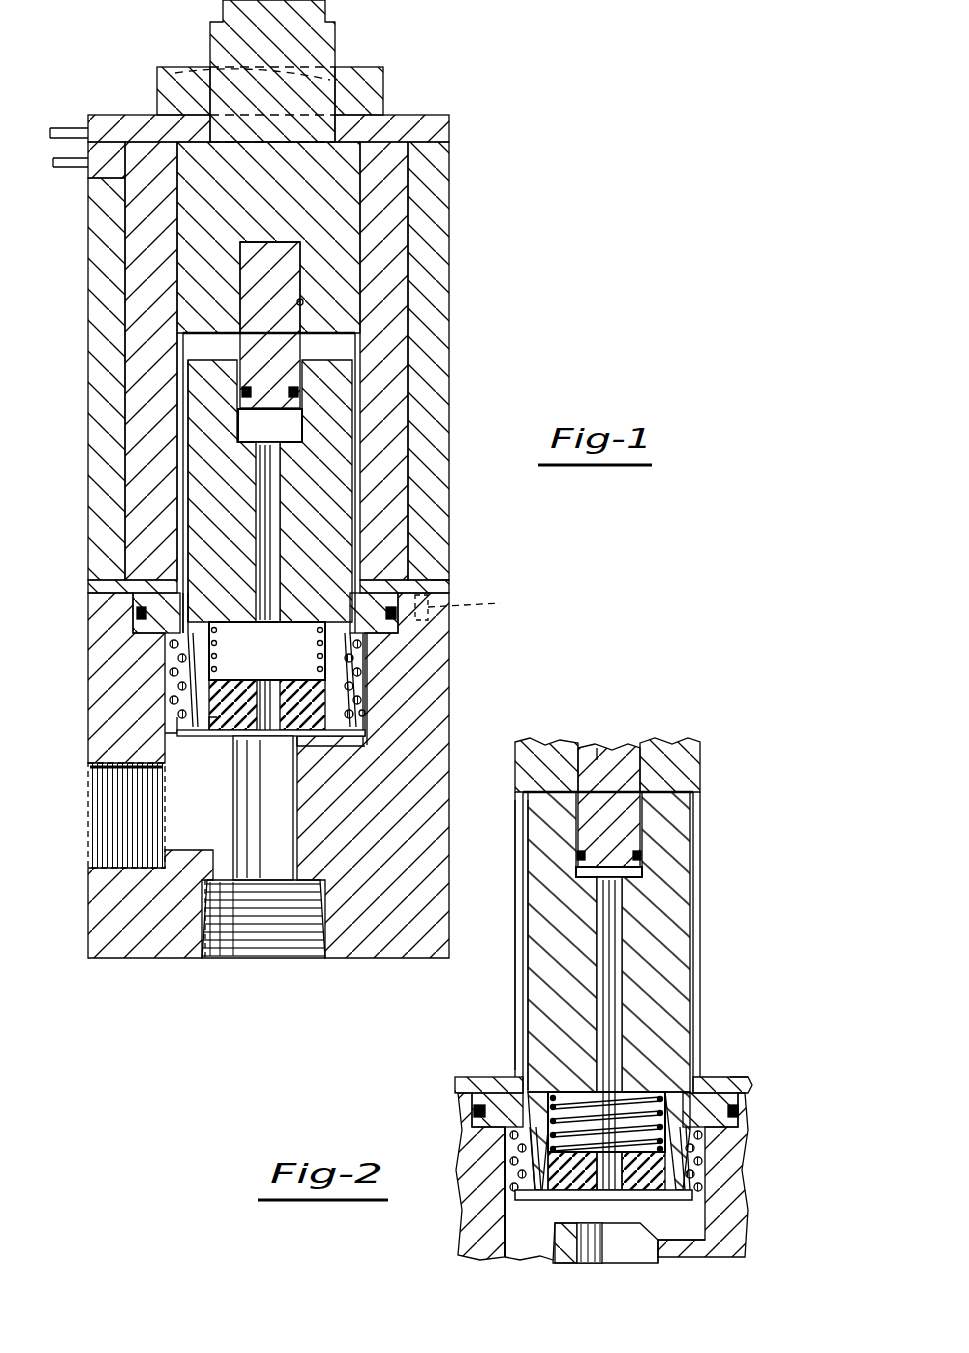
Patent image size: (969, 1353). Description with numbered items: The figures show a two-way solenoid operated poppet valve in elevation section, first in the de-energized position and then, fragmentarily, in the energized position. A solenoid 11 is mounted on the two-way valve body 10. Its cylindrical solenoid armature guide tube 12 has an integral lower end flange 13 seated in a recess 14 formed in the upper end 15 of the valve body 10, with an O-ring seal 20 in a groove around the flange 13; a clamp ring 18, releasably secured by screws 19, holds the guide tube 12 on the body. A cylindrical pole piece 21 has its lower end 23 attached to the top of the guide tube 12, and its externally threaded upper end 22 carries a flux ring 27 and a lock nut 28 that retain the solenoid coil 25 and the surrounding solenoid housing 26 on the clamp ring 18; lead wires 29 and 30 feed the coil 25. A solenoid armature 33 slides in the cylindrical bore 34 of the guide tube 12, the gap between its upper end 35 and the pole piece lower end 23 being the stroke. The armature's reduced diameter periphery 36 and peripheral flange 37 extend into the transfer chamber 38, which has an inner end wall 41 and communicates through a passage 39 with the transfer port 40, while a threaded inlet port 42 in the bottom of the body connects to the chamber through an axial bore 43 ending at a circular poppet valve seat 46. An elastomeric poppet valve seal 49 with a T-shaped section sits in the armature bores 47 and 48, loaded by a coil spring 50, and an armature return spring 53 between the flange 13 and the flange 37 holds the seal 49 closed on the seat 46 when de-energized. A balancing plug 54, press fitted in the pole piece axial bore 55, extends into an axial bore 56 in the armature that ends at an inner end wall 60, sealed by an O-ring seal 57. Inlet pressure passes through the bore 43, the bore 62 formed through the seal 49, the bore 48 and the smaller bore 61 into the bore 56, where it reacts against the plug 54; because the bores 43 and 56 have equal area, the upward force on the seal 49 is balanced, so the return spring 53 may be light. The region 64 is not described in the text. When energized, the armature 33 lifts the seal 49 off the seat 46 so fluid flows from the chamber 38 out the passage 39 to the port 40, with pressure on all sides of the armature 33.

In FIG. 1, the two-way valve body 10 is at (88, 710).
In FIG. 2, the two-way valve body 10 is at (733, 1232).
In FIG. 1, the solenoid 11 is at (88, 238).
In FIG. 1, the solenoid armature guide tube 12 is at (180, 410).
In FIG. 2, the solenoid armature guide tube 12 is at (516, 928).
In FIG. 1, the lower end flange 13 is at (378, 632).
In FIG. 2, the lower end flange 13 is at (720, 1120).
In FIG. 1, the recess 14 is at (380, 592).
In FIG. 2, the recess 14 is at (733, 1088).
In FIG. 1, the upper end of the valve body 15 is at (88, 586).
In FIG. 2, the upper end of the valve body 15 is at (748, 1085).
In FIG. 1, the clamp ring 18 is at (447, 588).
In FIG. 2, the clamp ring 18 is at (742, 1083).
In FIG. 1, the screws 19 is at (476, 609).
In FIG. 1, the O-ring seal 20 is at (398, 614).
In FIG. 2, the O-ring seal 20 is at (742, 1112).
In FIG. 1, the pole piece 21 is at (200, 210).
In FIG. 2, the pole piece 21 is at (692, 756).
In FIG. 1, the upper end of the pole piece 22 is at (217, 42).
In FIG. 1, the lower end of the pole piece 23 is at (195, 333).
In FIG. 2, the lower end of the pole piece 23 is at (683, 797).
In FIG. 1, the solenoid coil 25 is at (133, 280).
In FIG. 1, the solenoid housing 26 is at (100, 328).
In FIG. 1, the flux ring 27 is at (124, 122).
In FIG. 1, the lock nut 28 is at (175, 72).
In FIG. 1, the electrical power lead wire 29 is at (70, 130).
In FIG. 1, the electrical power lead wire 30 is at (70, 168).
In FIG. 1, the solenoid armature 33 is at (195, 376).
In FIG. 2, the solenoid armature 33 is at (683, 828).
In FIG. 1, the cylindrical bore 34 is at (188, 444).
In FIG. 2, the cylindrical bore 34 is at (528, 970).
In FIG. 1, the upper end of the armature 35 is at (202, 351).
In FIG. 2, the upper end of the armature 35 is at (526, 790).
In FIG. 1, the reduced diameter periphery 36 is at (366, 680).
In FIG. 2, the reduced diameter periphery 36 is at (535, 1165).
In FIG. 1, the peripheral flange 37 is at (365, 734).
In FIG. 2, the peripheral flange 37 is at (692, 1200).
In FIG. 1, the transfer chamber 38 is at (365, 716).
In FIG. 2, the transfer chamber 38 is at (700, 1243).
In FIG. 1, the passage 39 is at (178, 826).
In FIG. 2, the passage 39 is at (547, 1250).
In FIG. 1, the transfer port 40 is at (92, 775).
In FIG. 1, the inner end wall 41 is at (345, 740).
In FIG. 2, the inner end wall 41 is at (698, 1240).
In FIG. 1, the inlet port 42 is at (211, 940).
In FIG. 1, the axial bore 43 is at (287, 853).
In FIG. 2, the axial bore 43 is at (605, 1230).
In FIG. 1, the poppet valve seat 46 is at (286, 737).
In FIG. 2, the poppet valve seat 46 is at (616, 1227).
In FIG. 1, the axial bore 47 is at (310, 723).
In FIG. 2, the axial bore 47 is at (562, 1185).
In FIG. 1, the enlarged diameter bore 48 is at (208, 718).
In FIG. 2, the enlarged diameter bore 48 is at (665, 1148).
In FIG. 1, the poppet valve seal 49 is at (208, 718).
In FIG. 2, the poppet valve seal 49 is at (570, 1203).
In FIG. 1, the coil spring 50 is at (172, 648).
In FIG. 2, the coil spring 50 is at (557, 1094).
In FIG. 1, the armature return spring 53 is at (183, 678).
In FIG. 2, the armature return spring 53 is at (692, 1163).
In FIG. 1, the balancing plug 54 is at (292, 257).
In FIG. 2, the balancing plug 54 is at (628, 770).
In FIG. 1, the axial bore 55 is at (303, 302).
In FIG. 2, the axial bore 55 is at (595, 750).
In FIG. 1, the axial bore 56 is at (300, 426).
In FIG. 2, the axial bore 56 is at (650, 882).
In FIG. 1, the O-ring seal 57 is at (298, 390).
In FIG. 2, the O-ring seal 57 is at (645, 855).
In FIG. 1, the inner end wall 60 is at (248, 438).
In FIG. 2, the inner end wall 60 is at (620, 905).
In FIG. 1, the bore 61 is at (275, 508).
In FIG. 2, the bore 61 is at (620, 990).
In FIG. 1, the bore 62 is at (259, 736).
In FIG. 2, the bore 62 is at (612, 1195).
In FIG. 1, the body bore 64 is at (310, 240).